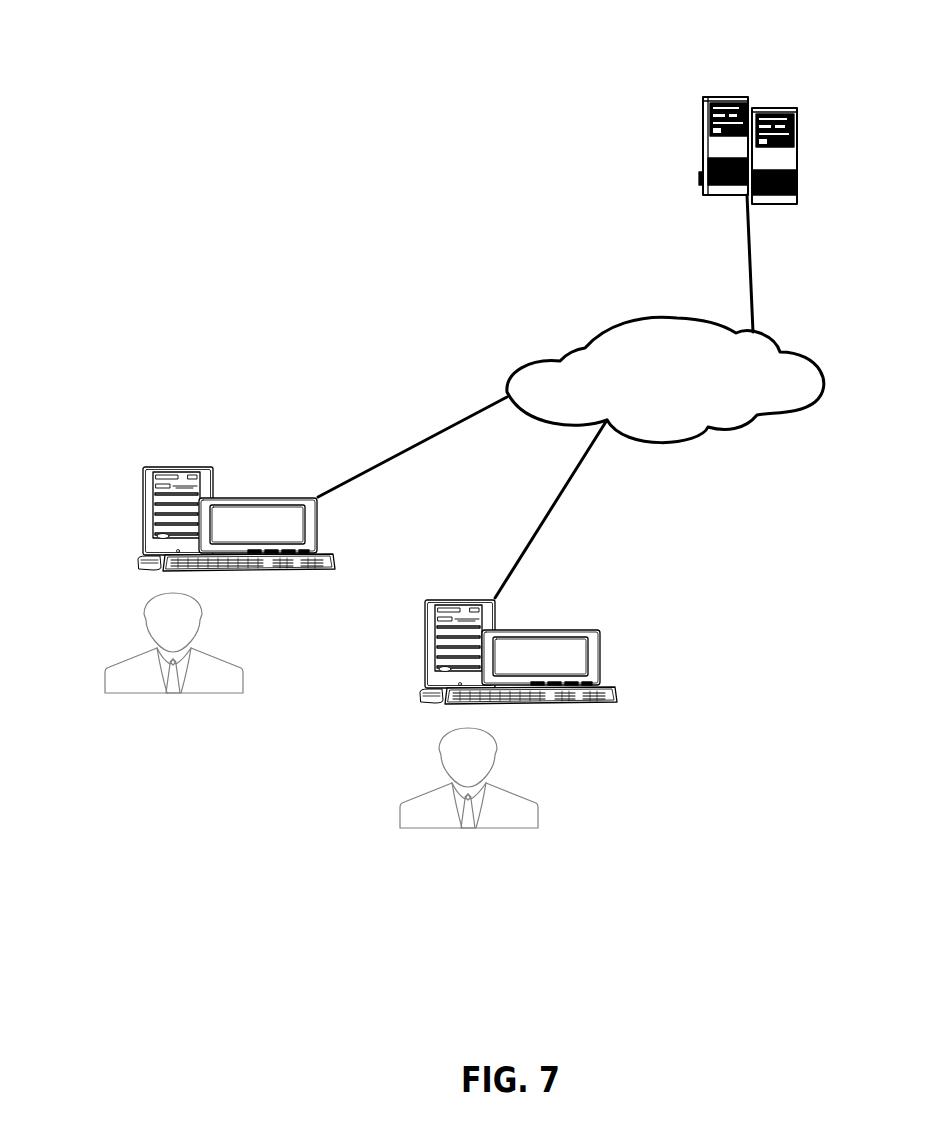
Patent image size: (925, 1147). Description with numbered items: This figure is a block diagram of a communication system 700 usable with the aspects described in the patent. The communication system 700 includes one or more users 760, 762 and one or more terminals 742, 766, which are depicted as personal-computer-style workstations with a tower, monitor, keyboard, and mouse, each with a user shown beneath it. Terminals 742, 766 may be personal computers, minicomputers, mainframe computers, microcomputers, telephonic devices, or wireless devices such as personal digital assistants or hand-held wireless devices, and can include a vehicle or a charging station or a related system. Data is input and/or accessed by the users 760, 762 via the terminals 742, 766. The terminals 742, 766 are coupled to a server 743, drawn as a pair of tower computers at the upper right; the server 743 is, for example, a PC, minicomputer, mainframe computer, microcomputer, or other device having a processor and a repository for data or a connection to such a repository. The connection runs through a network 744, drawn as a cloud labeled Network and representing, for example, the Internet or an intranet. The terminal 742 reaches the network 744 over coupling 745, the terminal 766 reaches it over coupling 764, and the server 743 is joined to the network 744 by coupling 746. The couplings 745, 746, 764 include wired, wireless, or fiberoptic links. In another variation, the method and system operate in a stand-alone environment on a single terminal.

The communication system 700 is at (190, 50).
The server 743 is at (728, 96).
The coupling 746 is at (754, 270).
The network 744 is at (602, 333).
The coupling 745 is at (360, 475).
The coupling 764 is at (569, 482).
The terminal 742 is at (178, 468).
The terminal 766 is at (597, 632).
The user 760 is at (137, 652).
The user 762 is at (515, 792).